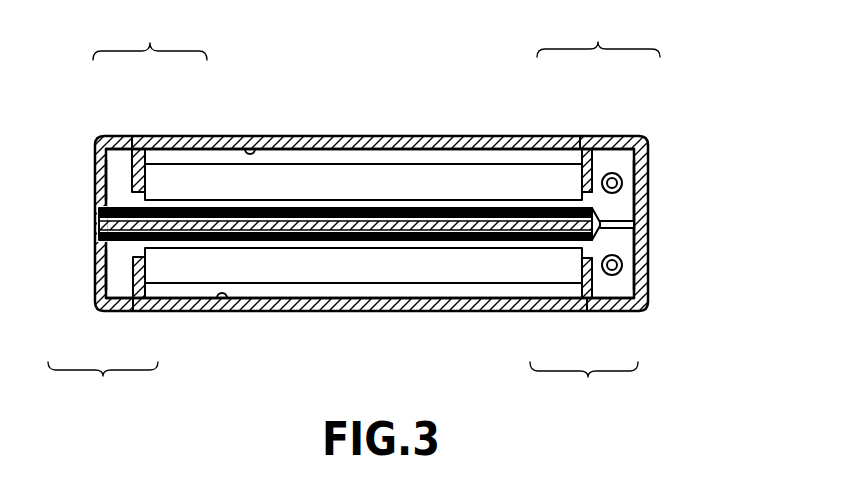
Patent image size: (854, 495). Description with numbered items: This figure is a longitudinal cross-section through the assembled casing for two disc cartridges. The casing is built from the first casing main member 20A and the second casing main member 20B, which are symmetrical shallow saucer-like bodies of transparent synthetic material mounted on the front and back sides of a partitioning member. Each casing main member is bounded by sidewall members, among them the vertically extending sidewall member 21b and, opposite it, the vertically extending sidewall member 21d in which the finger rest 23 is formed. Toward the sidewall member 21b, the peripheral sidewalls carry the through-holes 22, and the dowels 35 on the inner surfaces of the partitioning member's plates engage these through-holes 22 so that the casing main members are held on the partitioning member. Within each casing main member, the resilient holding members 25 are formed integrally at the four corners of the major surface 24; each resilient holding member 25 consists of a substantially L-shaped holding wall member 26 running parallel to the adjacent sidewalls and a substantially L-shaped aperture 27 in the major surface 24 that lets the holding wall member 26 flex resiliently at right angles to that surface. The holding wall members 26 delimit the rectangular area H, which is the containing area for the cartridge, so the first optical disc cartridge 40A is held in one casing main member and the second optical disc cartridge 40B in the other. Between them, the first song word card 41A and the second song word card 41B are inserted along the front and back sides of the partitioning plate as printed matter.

The first casing main member 20A is at (368, 138).
The second casing main member 20B is at (432, 311).
The vertically extending sidewall member 21b is at (647, 207).
The vertically extending sidewall member 21d is at (95, 175).
The through-hole 22 is at (647, 183).
The finger rest 23 is at (251, 147).
The major surface 24 is at (222, 311).
The resilient holding member 25 is at (354, 211).
The holding wall member 26 is at (164, 137).
The aperture 27 is at (131, 137).
The dowel 35 is at (621, 178).
The first optical disc cartridge 40A is at (443, 172).
The second optical disc cartridge 40B is at (345, 270).
The first song word card 41A is at (512, 206).
The second song word card 41B is at (502, 243).
The rectangular area H is at (278, 296).